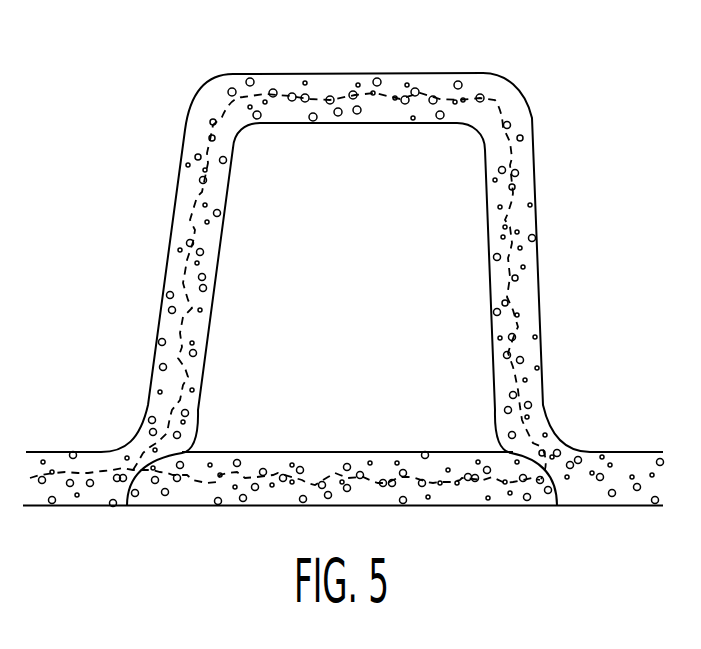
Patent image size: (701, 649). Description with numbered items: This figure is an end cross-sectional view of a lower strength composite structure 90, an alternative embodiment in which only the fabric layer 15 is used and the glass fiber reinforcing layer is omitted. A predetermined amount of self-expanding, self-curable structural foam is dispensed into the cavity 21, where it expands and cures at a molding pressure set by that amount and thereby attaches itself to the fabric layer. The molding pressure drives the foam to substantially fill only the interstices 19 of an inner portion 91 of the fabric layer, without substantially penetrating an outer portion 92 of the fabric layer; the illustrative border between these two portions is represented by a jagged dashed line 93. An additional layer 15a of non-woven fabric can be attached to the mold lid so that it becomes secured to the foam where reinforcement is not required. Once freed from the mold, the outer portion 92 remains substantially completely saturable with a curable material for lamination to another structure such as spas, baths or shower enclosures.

The composite structure 90 is at (570, 101).
The fabric layer 15 is at (533, 157).
The additional layer of non-woven fabric 15a is at (520, 507).
The interstices 19 is at (197, 157).
The cavity 21 is at (447, 297).
The inner portion 91 is at (370, 116).
The outer portion 92 is at (390, 80).
The jagged dashed line 93 is at (181, 328).